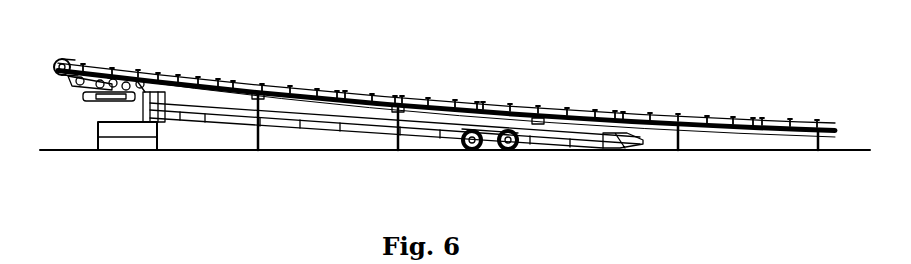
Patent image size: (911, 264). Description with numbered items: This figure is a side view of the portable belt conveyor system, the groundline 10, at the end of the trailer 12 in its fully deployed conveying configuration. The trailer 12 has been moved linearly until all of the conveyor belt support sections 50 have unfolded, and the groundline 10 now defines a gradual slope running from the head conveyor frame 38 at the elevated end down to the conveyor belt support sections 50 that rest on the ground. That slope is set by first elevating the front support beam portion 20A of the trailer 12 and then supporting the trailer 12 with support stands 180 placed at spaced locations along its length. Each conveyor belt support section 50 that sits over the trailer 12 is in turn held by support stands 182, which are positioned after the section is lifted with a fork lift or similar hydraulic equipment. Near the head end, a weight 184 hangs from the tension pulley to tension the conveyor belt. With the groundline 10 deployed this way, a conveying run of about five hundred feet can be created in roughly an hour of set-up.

The groundline 10 is at (444, 108).
The trailer 12 is at (562, 159).
The front support beam portion 20A is at (104, 103).
The head conveyor frame 38 is at (99, 65).
The conveyor belt support section 50 is at (785, 127).
The support stands 180 is at (156, 135).
The support stands 182 is at (257, 108).
The weight 184 is at (131, 78).